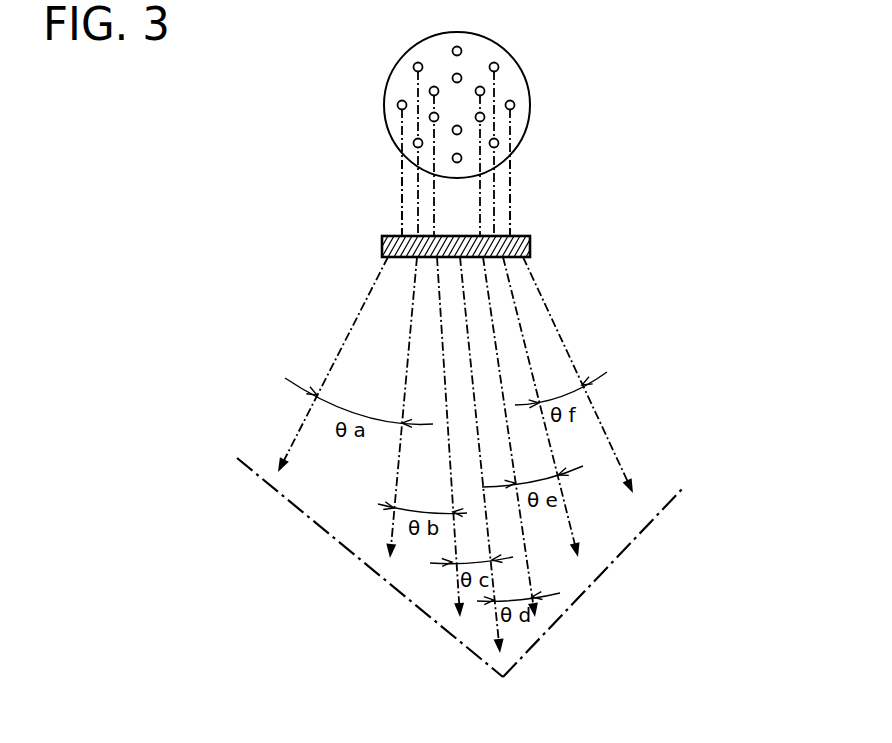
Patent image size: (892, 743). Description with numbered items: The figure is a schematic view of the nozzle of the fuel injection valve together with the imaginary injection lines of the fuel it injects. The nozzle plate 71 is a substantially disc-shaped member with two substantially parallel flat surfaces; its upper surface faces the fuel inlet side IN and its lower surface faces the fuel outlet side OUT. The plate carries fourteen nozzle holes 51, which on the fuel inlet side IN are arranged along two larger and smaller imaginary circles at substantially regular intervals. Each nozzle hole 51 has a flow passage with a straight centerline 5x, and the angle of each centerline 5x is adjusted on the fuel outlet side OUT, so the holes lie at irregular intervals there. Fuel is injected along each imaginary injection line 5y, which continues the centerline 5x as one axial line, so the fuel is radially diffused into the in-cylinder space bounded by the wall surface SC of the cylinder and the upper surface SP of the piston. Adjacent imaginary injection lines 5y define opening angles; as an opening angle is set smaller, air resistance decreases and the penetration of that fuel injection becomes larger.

The nozzle hole 51 is at (515, 103).
The nozzle plate 71 is at (377, 245).
The centerline 5x is at (381, 236).
The imaginary injection line 5y is at (353, 323).
The fuel inlet side IN is at (526, 222).
The fuel outlet side OUT is at (536, 269).
The wall surface of the cylinder SC is at (345, 540).
The upper surface of the piston SP is at (624, 540).